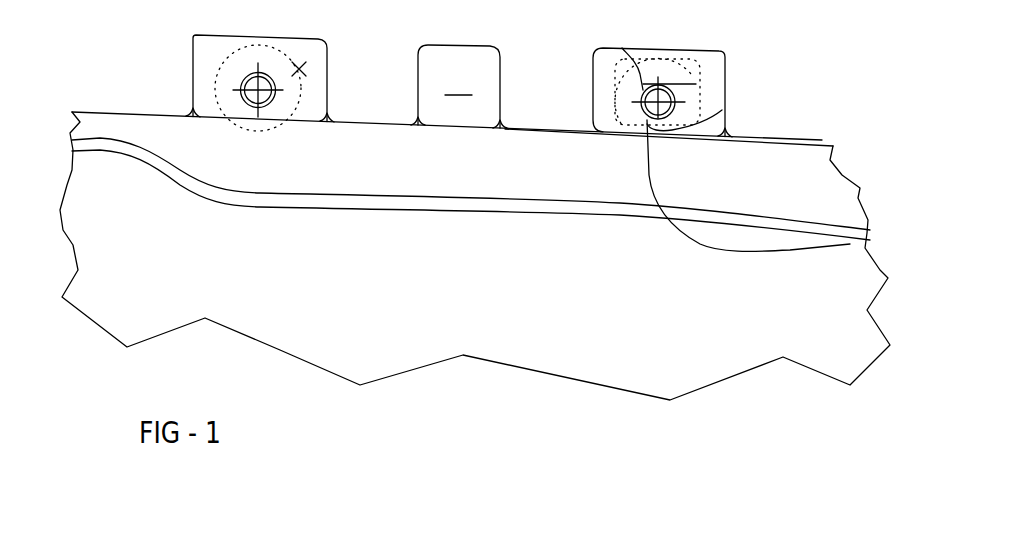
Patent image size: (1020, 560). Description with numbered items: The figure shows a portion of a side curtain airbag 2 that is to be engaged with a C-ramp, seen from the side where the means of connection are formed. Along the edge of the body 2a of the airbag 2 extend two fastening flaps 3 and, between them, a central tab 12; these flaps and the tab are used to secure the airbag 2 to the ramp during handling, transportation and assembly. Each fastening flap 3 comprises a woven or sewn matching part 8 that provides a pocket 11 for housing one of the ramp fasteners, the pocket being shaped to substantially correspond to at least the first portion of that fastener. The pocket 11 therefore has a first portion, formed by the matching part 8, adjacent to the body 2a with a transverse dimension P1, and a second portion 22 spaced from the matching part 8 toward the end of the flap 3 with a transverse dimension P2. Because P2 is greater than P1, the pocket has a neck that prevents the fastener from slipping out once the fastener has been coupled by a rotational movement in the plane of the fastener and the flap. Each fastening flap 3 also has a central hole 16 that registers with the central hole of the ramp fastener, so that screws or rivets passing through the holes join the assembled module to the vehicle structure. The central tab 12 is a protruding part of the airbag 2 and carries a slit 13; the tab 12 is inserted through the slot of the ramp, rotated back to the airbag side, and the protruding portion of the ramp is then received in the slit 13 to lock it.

The airbag 2 is at (152, 292).
The body of airbag 2a is at (787, 182).
The fastening flap 3 is at (193, 62).
The matching part 8 is at (706, 120).
The pocket 11 is at (306, 66).
The tab 12 is at (461, 58).
The slit 13 is at (462, 90).
The central hole 16 is at (676, 88).
The second portion of pocket 22 is at (704, 81).
The transverse dimension of first pocket portion P1 is at (850, 244).
The transverse dimension of second pocket portion P2 is at (622, 48).